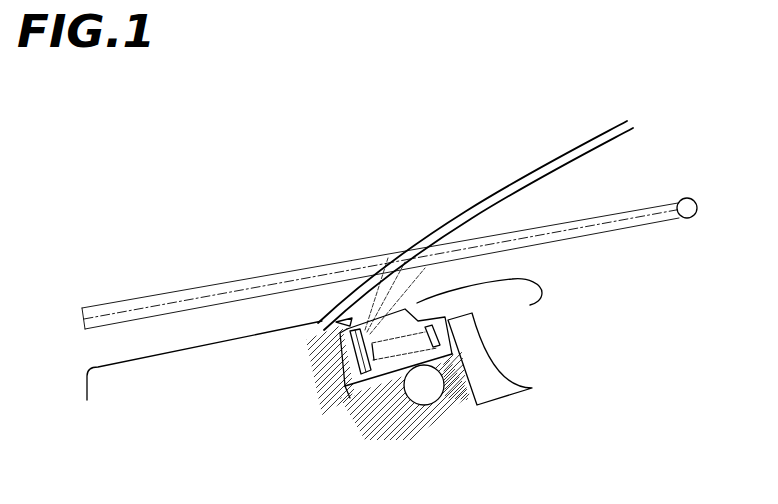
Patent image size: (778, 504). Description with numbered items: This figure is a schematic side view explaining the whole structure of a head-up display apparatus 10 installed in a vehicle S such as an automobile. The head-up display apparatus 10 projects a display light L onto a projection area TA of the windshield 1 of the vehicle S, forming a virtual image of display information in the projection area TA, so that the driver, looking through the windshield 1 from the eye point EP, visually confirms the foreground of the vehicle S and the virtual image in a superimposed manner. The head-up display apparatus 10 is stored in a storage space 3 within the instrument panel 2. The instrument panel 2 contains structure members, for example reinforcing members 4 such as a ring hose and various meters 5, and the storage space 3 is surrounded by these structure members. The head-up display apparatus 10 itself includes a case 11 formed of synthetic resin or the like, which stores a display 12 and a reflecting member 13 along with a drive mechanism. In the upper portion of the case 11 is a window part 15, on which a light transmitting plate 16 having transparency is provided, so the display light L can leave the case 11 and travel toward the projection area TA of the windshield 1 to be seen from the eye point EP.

The windshield 1 is at (459, 217).
The instrument panel 2 is at (513, 277).
The storage space 3 is at (340, 380).
The reinforcing member 4 is at (428, 396).
The meter 5 is at (500, 373).
The head-up display apparatus 10 is at (378, 378).
The case 11 is at (384, 382).
The display 12 is at (450, 328).
The reflecting member 13 is at (352, 351).
The window part 15 is at (340, 320).
The light transmitting plate 16 is at (352, 315).
The display light L is at (378, 300).
The vehicle S is at (178, 345).
The projection area TA is at (362, 335).
The eye point EP is at (689, 198).